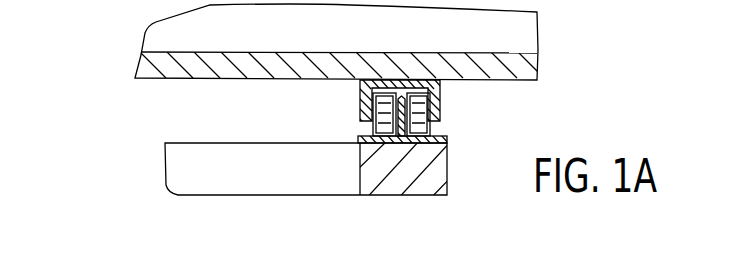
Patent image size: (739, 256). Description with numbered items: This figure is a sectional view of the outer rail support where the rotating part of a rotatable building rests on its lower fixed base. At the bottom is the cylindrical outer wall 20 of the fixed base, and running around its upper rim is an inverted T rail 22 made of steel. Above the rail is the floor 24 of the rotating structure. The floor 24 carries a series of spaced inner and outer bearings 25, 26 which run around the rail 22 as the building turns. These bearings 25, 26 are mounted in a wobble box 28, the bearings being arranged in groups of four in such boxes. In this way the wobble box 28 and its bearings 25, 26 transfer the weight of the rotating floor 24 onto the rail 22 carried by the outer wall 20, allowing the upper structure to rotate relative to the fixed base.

The cylindrical outer wall 20 is at (432, 173).
The inverted T rail 22 is at (445, 137).
The floor 24 is at (510, 70).
The inner bearing 25 is at (383, 107).
The outer bearing 26 is at (418, 100).
The wobble box 28 is at (360, 87).